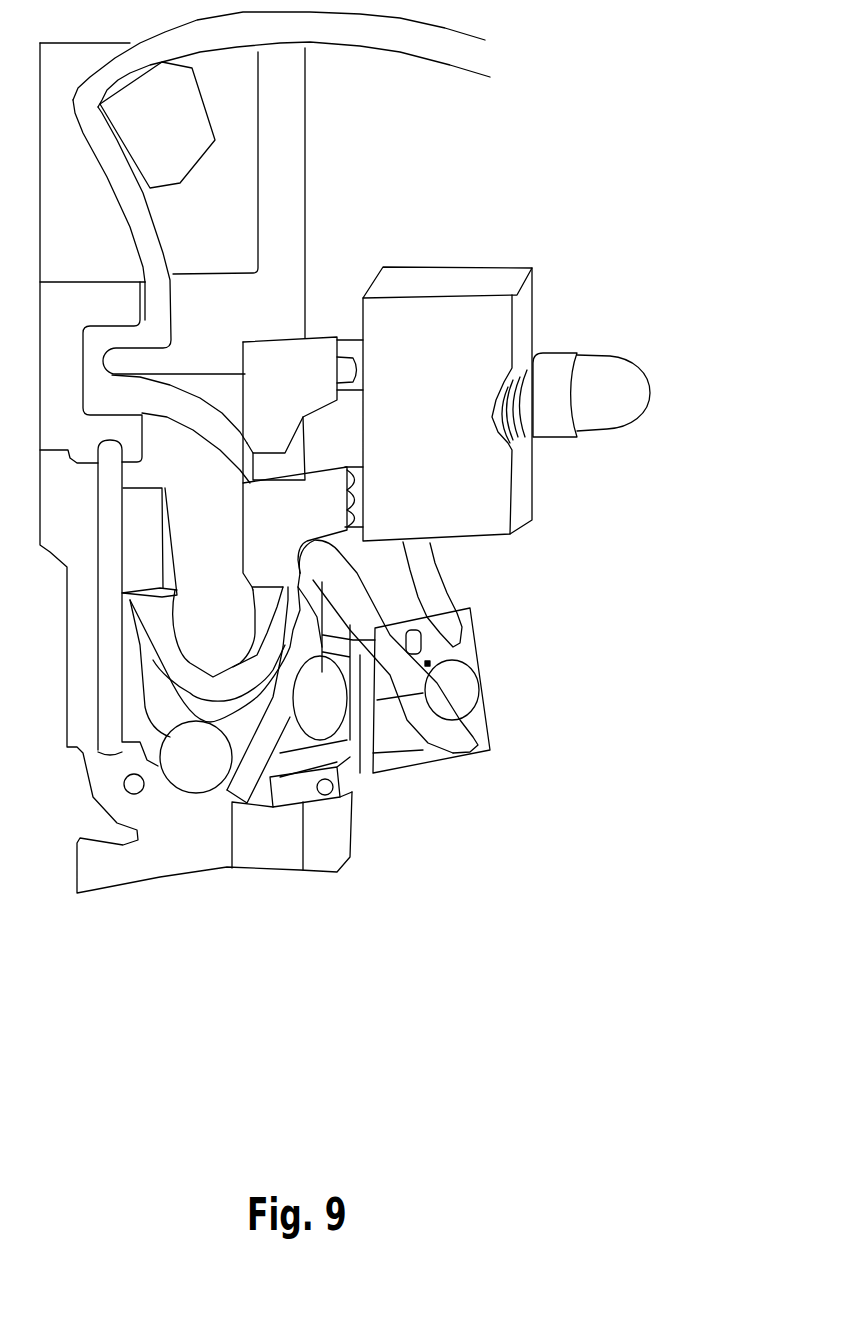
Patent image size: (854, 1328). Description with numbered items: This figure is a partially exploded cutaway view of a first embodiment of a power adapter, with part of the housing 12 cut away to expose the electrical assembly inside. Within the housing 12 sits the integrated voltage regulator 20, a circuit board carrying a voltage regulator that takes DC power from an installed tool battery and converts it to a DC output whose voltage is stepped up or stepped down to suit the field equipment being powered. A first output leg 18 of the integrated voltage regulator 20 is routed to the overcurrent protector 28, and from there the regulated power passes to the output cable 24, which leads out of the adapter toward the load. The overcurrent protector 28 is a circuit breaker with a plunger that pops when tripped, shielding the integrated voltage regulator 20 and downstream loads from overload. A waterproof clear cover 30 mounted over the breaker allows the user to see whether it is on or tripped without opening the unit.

The housing 12 is at (350, 847).
The first output leg 18 is at (447, 589).
The integrated voltage regulator 20 is at (490, 707).
The output cable 24 is at (500, 60).
The overcurrent protector 28 is at (533, 267).
The waterproof clear cover 30 is at (637, 354).